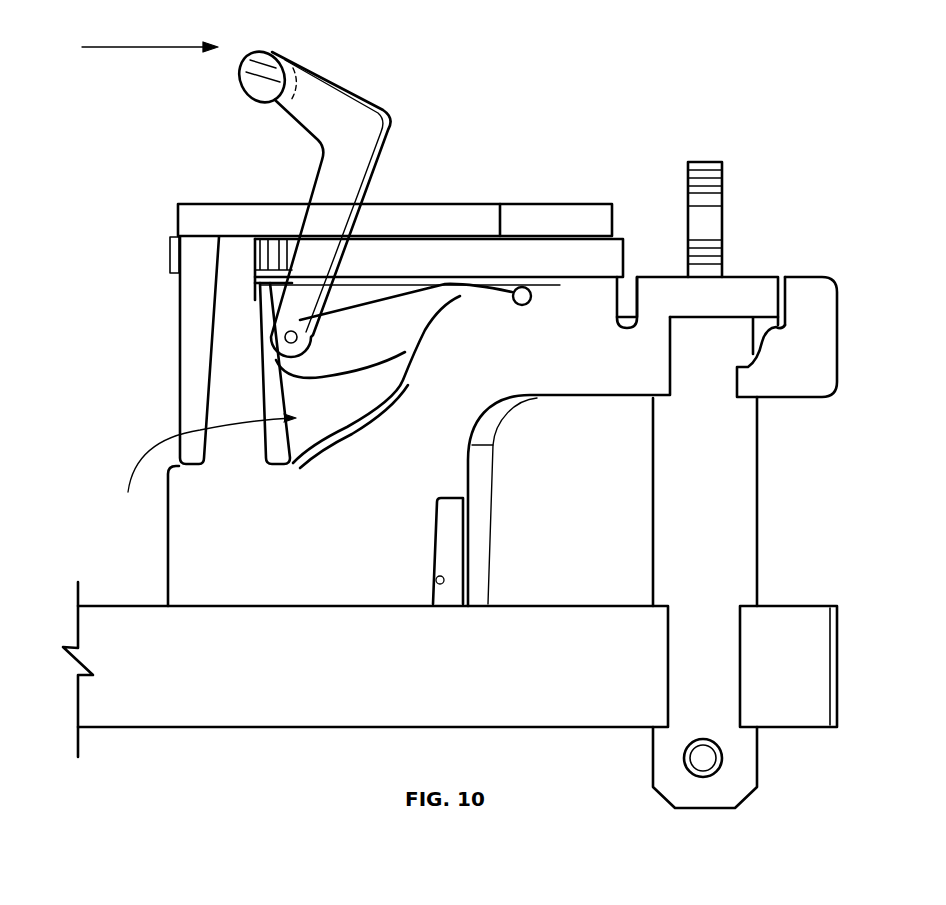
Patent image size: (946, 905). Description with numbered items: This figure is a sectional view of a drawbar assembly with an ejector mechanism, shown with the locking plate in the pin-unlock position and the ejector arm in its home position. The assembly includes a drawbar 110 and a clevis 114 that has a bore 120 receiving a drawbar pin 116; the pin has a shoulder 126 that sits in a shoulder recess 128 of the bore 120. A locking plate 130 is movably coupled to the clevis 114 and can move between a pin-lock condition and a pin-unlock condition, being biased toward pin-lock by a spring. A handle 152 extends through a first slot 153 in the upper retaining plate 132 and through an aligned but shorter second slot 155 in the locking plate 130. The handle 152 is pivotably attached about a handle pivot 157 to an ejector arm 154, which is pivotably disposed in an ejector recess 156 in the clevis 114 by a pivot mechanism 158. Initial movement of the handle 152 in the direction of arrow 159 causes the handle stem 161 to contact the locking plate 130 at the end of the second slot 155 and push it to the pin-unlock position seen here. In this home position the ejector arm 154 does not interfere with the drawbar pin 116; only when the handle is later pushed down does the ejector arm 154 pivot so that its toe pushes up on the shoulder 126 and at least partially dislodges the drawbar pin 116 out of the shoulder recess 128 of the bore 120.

The drawbar 110 is at (505, 702).
The clevis 114 is at (318, 548).
The drawbar pin 116 is at (737, 520).
The bore 120 is at (753, 327).
The shoulder 126 is at (726, 310).
The shoulder recess 128 is at (777, 332).
The locking plate 130 is at (172, 255).
The upper retaining plate 132 is at (537, 213).
The handle 152 is at (278, 55).
The first slot 153 is at (500, 221).
The ejector arm 154 is at (362, 347).
The second slot 155 is at (373, 273).
The ejector recess 156 is at (203, 466).
The handle pivot 157 is at (272, 360).
The pivot mechanism 158 is at (514, 305).
The arrow 159 is at (150, 38).
The handle stem 161 is at (330, 183).